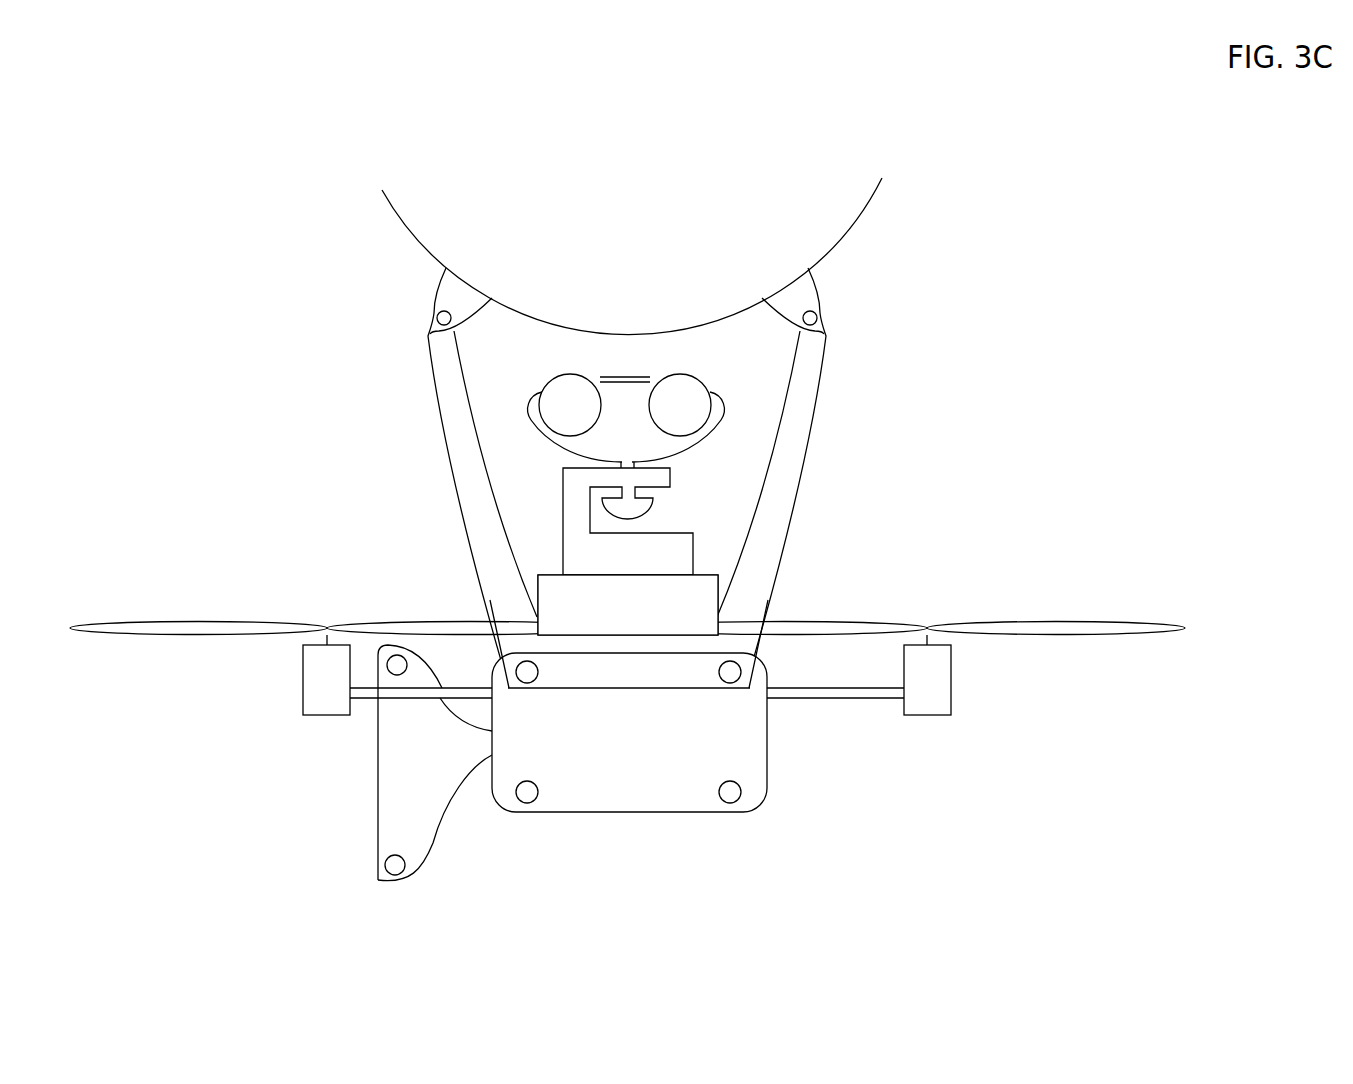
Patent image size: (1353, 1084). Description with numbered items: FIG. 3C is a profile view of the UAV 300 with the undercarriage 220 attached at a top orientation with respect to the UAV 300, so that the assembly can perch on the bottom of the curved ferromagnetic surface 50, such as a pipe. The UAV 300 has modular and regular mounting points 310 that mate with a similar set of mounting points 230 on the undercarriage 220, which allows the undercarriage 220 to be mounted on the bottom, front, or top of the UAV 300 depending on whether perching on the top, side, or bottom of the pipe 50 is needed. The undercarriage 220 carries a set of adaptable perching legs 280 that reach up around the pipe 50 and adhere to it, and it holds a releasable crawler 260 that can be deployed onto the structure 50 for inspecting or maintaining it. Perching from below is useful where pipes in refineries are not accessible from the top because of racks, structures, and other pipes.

The curved ferromagnetic surface 50 is at (876, 227).
The undercarriage 220 is at (492, 574).
The perching legs 280 is at (492, 552).
The releasable crawler 260 is at (734, 449).
The UAV 300 is at (627, 771).
The modular mounting points 310 is at (503, 887).
The mounting points 230 is at (640, 763).